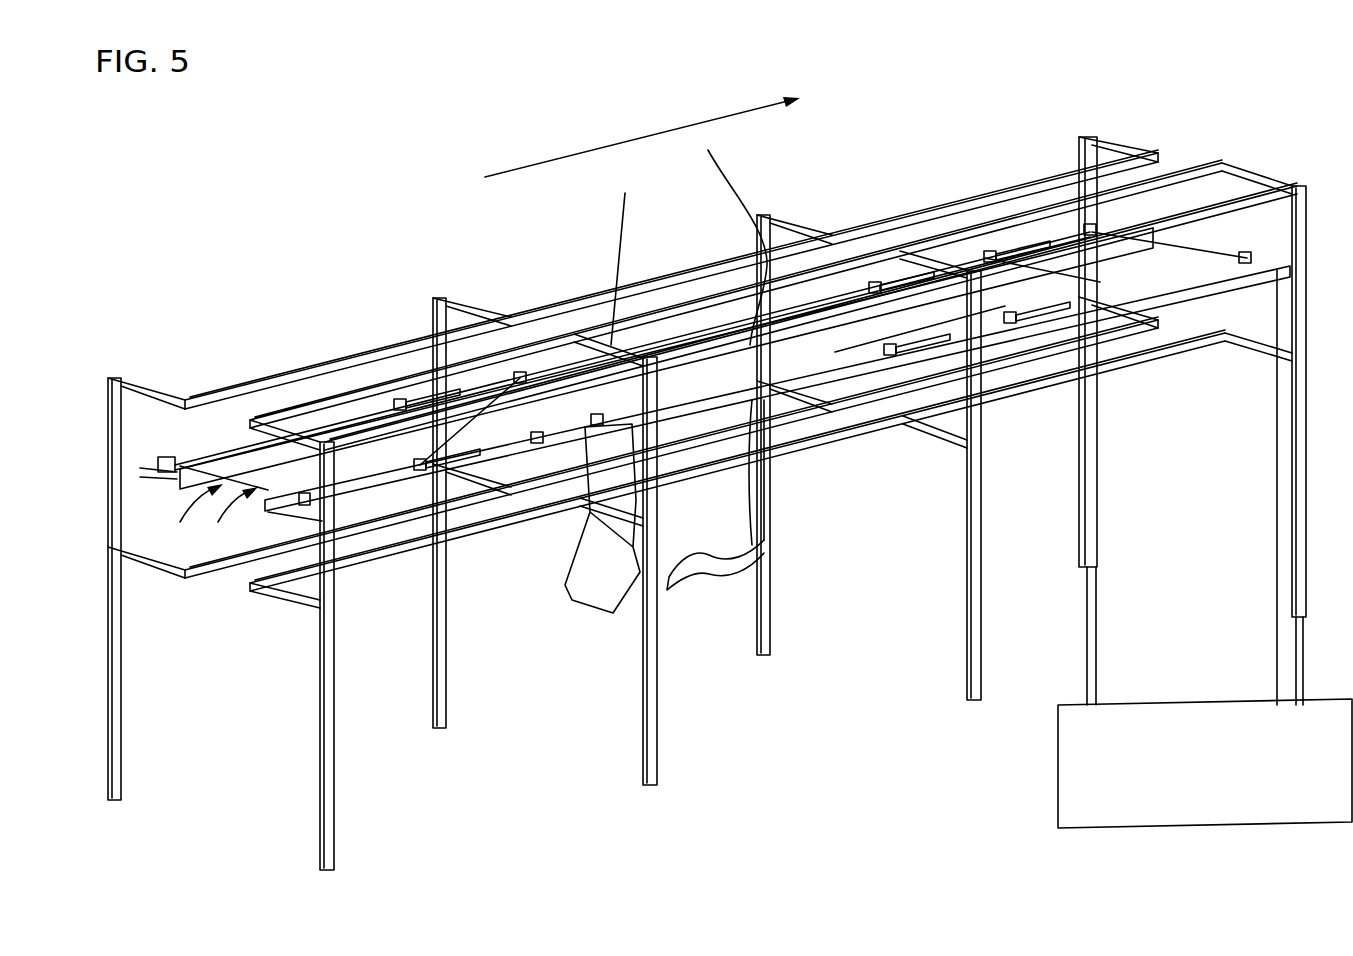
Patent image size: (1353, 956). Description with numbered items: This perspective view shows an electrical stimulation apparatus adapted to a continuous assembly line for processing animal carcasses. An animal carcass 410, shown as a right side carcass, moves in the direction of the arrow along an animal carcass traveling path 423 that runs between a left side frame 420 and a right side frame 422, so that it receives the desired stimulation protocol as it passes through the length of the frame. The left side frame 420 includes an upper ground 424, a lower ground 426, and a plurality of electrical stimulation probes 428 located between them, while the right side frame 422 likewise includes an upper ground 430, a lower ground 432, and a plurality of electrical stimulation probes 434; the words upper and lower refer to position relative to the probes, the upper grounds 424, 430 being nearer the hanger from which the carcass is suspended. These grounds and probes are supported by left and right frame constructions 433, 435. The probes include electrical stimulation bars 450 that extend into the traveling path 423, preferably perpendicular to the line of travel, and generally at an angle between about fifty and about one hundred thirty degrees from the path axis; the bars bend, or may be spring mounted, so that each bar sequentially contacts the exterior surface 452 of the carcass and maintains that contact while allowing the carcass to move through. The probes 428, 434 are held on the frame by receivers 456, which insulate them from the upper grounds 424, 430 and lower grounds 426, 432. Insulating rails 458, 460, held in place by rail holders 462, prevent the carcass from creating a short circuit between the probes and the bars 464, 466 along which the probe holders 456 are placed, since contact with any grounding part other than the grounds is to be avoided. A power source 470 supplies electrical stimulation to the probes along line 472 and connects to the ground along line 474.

The animal carcass 410 is at (690, 237).
The left side frame 420 is at (540, 298).
The right side frame 422 is at (1312, 238).
The animal carcass traveling path 423 is at (985, 222).
The upper ground 424 is at (297, 370).
The lower ground 426 is at (207, 566).
The electrical stimulation probes 428 is at (193, 516).
The upper ground 430 is at (337, 398).
The lower ground 432 is at (400, 548).
The left frame construction 433 is at (106, 437).
The electrical stimulation probes 434 is at (229, 517).
The right frame construction 435 is at (335, 727).
The electrical stimulation bars 450 is at (437, 410).
The exterior surface 452 is at (612, 300).
The receivers 456 is at (541, 410).
The insulating rail 458 is at (255, 462).
The insulating rail 460 is at (837, 351).
The rail holders 462 is at (480, 387).
The bar 464 is at (370, 418).
The bar 466 is at (555, 440).
The power source 470 is at (1058, 750).
The line 472 is at (1277, 557).
The line 474 is at (1085, 607).